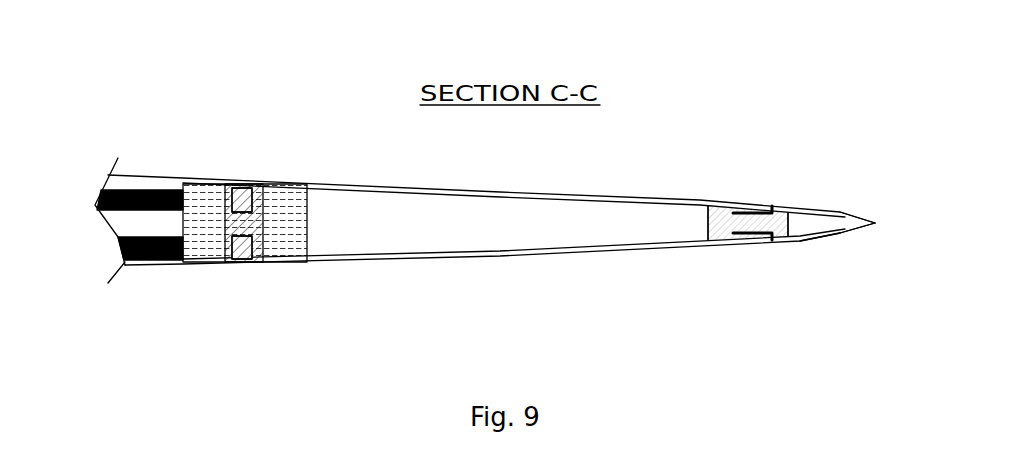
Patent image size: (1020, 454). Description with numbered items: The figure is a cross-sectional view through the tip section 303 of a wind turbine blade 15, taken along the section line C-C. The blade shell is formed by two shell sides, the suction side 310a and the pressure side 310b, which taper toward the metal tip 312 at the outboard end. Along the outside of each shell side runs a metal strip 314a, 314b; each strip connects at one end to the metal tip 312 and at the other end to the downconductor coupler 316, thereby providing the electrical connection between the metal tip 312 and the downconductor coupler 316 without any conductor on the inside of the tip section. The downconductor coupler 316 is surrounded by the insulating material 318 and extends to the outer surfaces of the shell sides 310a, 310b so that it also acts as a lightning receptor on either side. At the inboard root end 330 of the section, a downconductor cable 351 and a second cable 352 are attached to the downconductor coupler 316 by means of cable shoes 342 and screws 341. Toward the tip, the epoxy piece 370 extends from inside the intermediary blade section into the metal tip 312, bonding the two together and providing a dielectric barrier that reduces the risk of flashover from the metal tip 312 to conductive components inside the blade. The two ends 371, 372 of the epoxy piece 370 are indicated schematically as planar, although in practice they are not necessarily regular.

The tip section 303 is at (122, 57).
The rotor blade 15 is at (875, 223).
The shell side (suction side) 310a is at (437, 197).
The shell side (pressure side) 310b is at (392, 256).
The metal strip 314a is at (251, 183).
The metal strip 314b is at (237, 265).
The insulating material 318 is at (278, 200).
The downconductor coupler 316 is at (255, 243).
The screws 341 is at (230, 183).
The cable shoes 342 is at (253, 259).
The downconductor cable 351 is at (95, 188).
The lower bushing 352 is at (120, 247).
The root end 330 is at (130, 272).
The epoxy piece 370 is at (737, 207).
The end of epoxy piece 371 is at (708, 227).
The end of epoxy piece 372 is at (793, 212).
The metal tip 312 is at (830, 238).